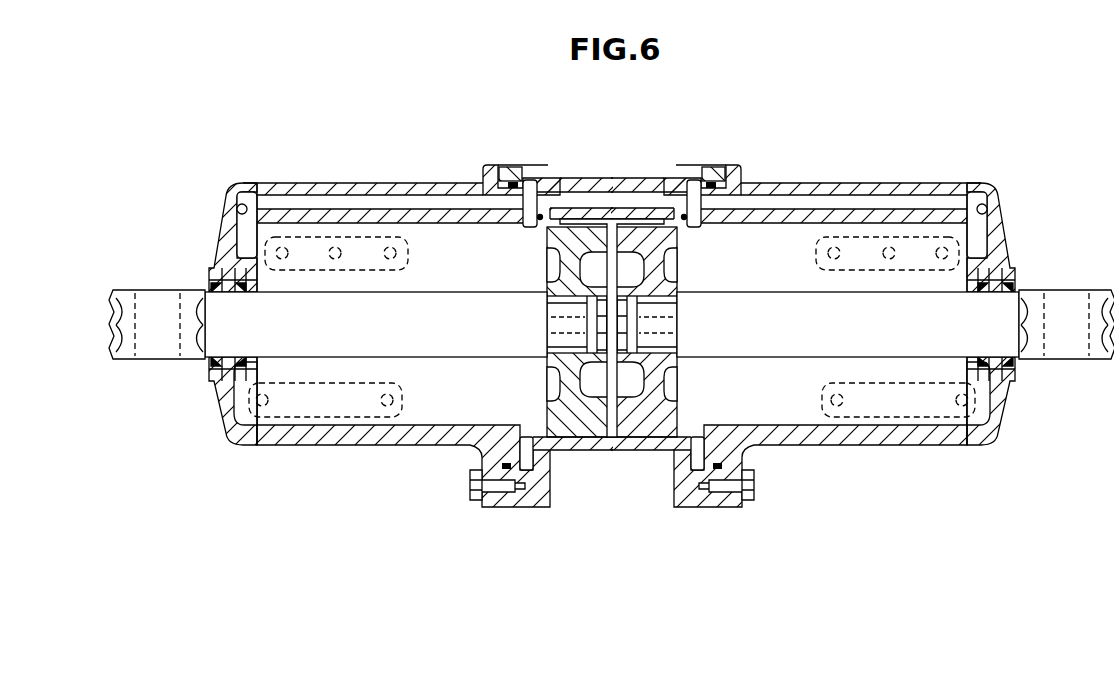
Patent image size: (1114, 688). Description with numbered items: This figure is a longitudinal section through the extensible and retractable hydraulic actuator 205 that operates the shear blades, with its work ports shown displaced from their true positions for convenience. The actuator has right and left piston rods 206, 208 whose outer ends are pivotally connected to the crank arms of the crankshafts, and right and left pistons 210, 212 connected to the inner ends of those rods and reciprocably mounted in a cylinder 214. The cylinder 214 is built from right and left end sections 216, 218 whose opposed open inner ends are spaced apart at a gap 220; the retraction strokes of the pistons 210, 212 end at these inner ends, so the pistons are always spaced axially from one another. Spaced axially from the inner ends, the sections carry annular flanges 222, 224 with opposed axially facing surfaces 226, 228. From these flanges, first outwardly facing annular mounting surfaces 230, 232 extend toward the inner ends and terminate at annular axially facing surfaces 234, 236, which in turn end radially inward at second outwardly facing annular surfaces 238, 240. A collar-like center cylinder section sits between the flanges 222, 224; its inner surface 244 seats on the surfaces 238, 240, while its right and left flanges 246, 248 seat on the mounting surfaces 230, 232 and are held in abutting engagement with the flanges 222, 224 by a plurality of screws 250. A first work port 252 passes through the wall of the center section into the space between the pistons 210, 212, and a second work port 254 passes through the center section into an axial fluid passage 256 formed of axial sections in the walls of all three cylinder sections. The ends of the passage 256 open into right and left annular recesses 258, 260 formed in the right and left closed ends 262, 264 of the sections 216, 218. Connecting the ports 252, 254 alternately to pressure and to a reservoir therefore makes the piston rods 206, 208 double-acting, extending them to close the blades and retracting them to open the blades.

The motor assembly 205 is at (611, 306).
The right piston rod 206 is at (788, 292).
The left piston rod 208 is at (430, 292).
The right piston 210 is at (675, 244).
The left piston 212 is at (552, 244).
The cylinder 214 is at (612, 171).
The right end section 216 is at (851, 189).
The left end section 218 is at (286, 188).
The space 220 is at (614, 440).
The right annular flange 222 is at (740, 166).
The left annular flange 224 is at (489, 165).
The axially facing surface 226 is at (719, 176).
The axially facing surface 228 is at (511, 180).
The first outwardly facing annular mounting surface 230 is at (712, 180).
The first outwardly facing annular mounting surface 232 is at (518, 170).
The annular axially facing surface 234 is at (686, 186).
The annular axially facing surface 236 is at (541, 181).
The second outwardly facing annular surface 238 is at (689, 222).
The second outwardly facing annular surface 240 is at (550, 228).
The inner surface 244 is at (574, 440).
The right flange 246 is at (693, 506).
The left flange 248 is at (520, 506).
The screws 250 is at (470, 486).
The first work port 252 is at (606, 452).
The second work port 254 is at (607, 190).
The axial fluid passage 256 is at (904, 200).
The right annular recess 258 is at (988, 208).
The left annular recess 260 is at (239, 208).
The right closed end 262 is at (1003, 242).
The left closed end 264 is at (221, 243).